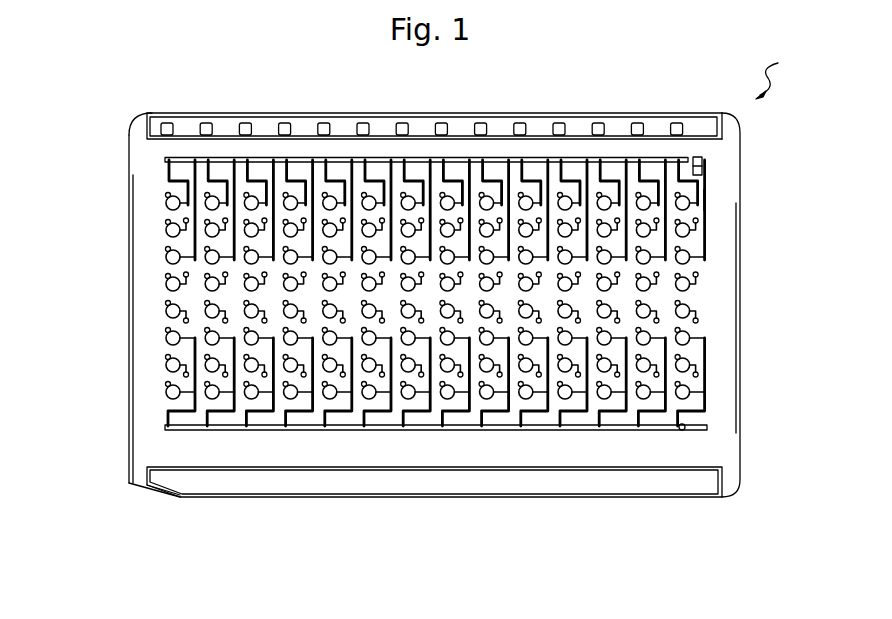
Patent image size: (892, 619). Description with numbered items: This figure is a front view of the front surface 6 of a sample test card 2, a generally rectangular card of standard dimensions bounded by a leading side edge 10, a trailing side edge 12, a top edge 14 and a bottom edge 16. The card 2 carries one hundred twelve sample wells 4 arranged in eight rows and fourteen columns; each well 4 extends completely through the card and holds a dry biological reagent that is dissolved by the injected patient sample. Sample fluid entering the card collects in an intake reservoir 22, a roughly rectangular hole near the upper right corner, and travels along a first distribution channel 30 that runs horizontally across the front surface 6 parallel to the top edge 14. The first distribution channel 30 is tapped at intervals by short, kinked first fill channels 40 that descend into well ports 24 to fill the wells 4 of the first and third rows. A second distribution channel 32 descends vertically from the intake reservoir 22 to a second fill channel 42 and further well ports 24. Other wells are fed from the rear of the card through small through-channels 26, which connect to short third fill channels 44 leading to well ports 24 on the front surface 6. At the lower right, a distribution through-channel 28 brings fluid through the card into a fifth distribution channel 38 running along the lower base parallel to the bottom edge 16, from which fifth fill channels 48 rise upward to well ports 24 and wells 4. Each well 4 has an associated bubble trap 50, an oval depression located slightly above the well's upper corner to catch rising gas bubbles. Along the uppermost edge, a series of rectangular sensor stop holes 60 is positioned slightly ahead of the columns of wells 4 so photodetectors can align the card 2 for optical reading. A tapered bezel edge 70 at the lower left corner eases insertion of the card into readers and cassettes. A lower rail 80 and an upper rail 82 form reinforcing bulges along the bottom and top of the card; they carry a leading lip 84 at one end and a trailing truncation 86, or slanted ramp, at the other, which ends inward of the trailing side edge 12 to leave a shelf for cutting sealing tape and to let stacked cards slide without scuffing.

The sample test card 2 is at (773, 79).
The sample well 4 is at (688, 291).
The front surface 6 is at (483, 309).
The leading side edge 10 is at (129, 328).
The trailing side edge 12 is at (742, 397).
The top edge 14 is at (268, 113).
The bottom edge 16 is at (305, 497).
The intake reservoir 22 is at (702, 168).
The well port 24 is at (666, 190).
The through-channel 26 is at (698, 325).
The distribution through-channel 28 is at (683, 431).
The first distribution channel 30 is at (346, 157).
The second distribution channel 32 is at (706, 233).
The fifth distribution channel 38 is at (498, 431).
The first fill channel 40 is at (585, 180).
The second fill channel 42 is at (706, 200).
The third fill channel 44 is at (697, 315).
The fifth fill channel 48 is at (425, 431).
The bubble trap 50 is at (435, 232).
The sensor stop hole 60 is at (165, 123).
The tapered bezel edge 70 is at (162, 492).
The lower rail 80 is at (576, 482).
The upper rail 82 is at (410, 128).
The leading lip 84 is at (129, 122).
The trailing truncation 86 is at (722, 122).